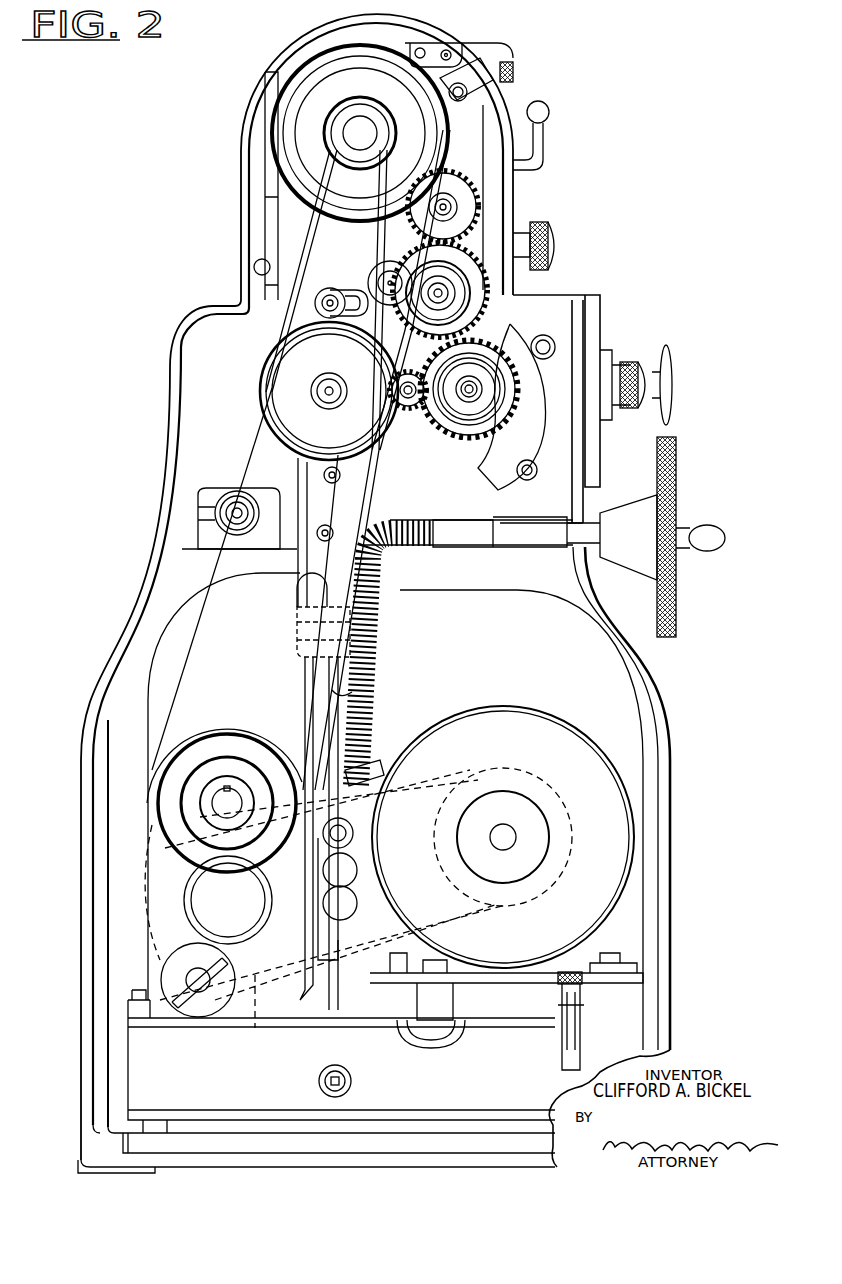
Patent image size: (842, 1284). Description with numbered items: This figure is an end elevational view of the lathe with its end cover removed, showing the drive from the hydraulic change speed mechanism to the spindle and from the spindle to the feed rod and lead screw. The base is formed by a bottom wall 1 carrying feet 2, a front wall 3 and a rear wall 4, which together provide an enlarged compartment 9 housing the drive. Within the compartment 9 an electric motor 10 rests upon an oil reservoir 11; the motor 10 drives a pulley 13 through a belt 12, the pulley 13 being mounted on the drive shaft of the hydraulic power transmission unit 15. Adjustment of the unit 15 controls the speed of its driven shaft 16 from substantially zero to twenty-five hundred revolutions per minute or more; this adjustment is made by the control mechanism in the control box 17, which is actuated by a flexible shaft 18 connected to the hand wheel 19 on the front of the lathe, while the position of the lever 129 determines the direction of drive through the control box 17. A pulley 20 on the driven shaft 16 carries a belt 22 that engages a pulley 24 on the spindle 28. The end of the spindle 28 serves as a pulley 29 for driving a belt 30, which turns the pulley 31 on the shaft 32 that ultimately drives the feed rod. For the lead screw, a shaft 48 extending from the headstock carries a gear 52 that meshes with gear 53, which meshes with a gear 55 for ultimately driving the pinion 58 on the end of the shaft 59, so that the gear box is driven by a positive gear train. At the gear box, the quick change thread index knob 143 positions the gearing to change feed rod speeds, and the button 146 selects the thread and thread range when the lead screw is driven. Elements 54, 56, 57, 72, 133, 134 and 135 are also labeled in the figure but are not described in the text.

The bottom wall 1 is at (323, 1150).
The feet 2 is at (78, 1165).
The front wall 3 is at (672, 833).
The rear wall 4 is at (81, 866).
The compartment 9 is at (466, 672).
The electric motor 10 is at (597, 790).
The oil reservoir 11 is at (620, 1007).
The belt 12 is at (376, 788).
The pulley 13 is at (325, 913).
The hydraulic power transmission unit 15 is at (236, 732).
The driven shaft 16 is at (226, 803).
The control box 17 is at (358, 851).
The flexible shaft 18 is at (377, 636).
The hand wheel 19 is at (677, 458).
The pulley 20 is at (267, 763).
The belt 22 is at (220, 641).
The pulley 24 is at (275, 153).
The spindle 28 is at (370, 127).
The pulley 29 is at (358, 125).
The belt 30 is at (296, 266).
The pulley 31 is at (320, 369).
The shaft 32 is at (337, 391).
The shaft 48 is at (446, 206).
The gear 52 is at (462, 200).
The gear 53 is at (467, 262).
The roller 54 is at (442, 293).
The gear 55 is at (505, 372).
The main gear 56 is at (473, 389).
The knob shaft 57 is at (512, 433).
The pinion 58 is at (411, 416).
The shaft 59 is at (406, 410).
The adjusting knob 72 is at (557, 247).
The lever 129 is at (547, 122).
The rack guide 133 is at (352, 690).
The slide block 134 is at (317, 640).
The slide cap 135 is at (298, 590).
The quick change thread index knob 143 is at (672, 376).
The button 146 is at (672, 402).